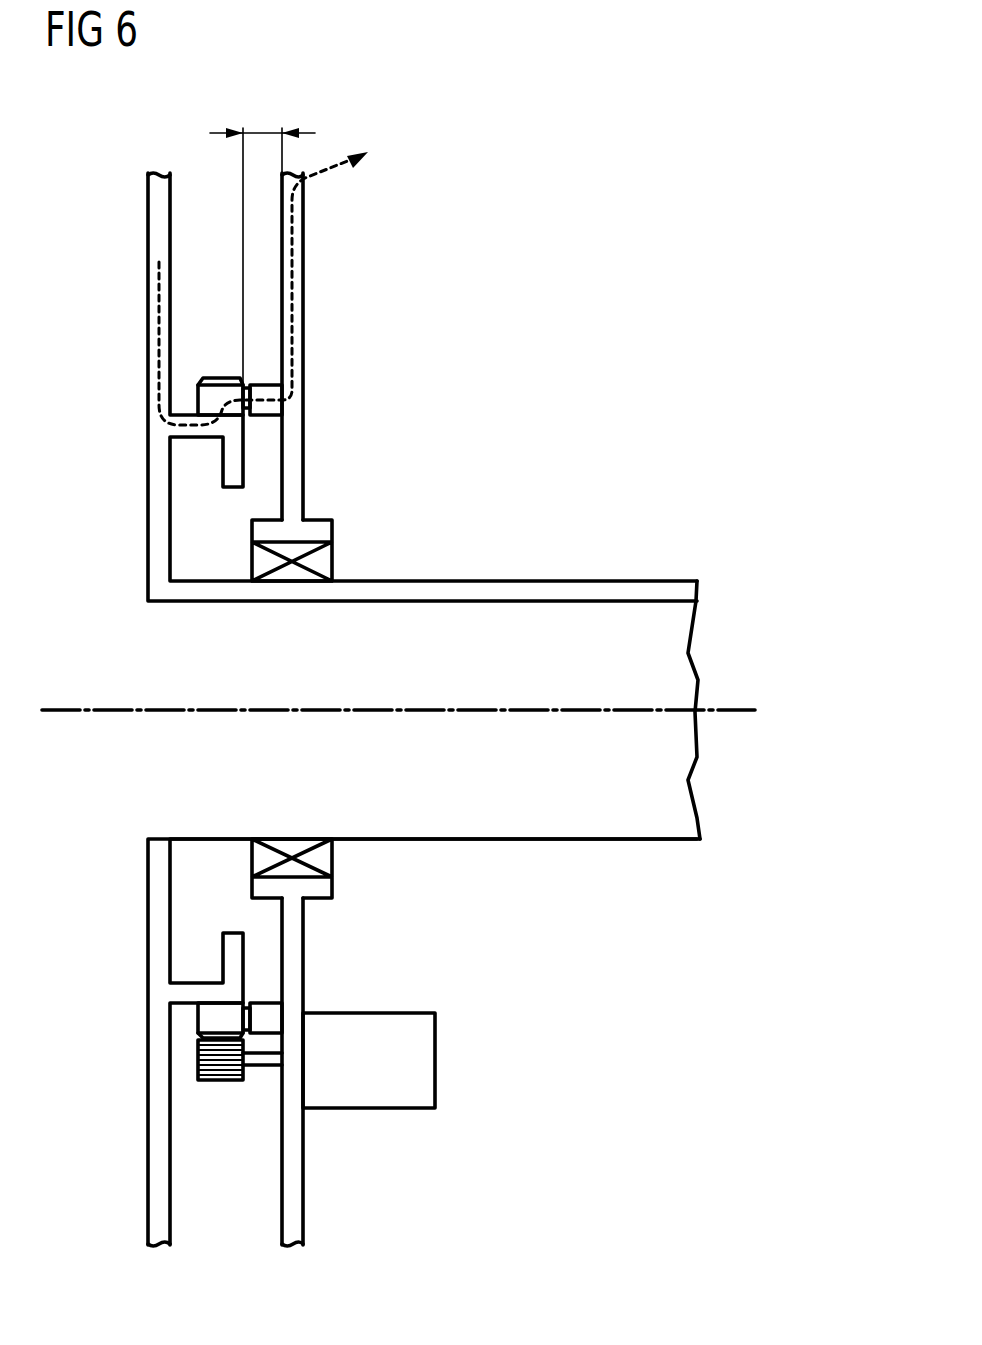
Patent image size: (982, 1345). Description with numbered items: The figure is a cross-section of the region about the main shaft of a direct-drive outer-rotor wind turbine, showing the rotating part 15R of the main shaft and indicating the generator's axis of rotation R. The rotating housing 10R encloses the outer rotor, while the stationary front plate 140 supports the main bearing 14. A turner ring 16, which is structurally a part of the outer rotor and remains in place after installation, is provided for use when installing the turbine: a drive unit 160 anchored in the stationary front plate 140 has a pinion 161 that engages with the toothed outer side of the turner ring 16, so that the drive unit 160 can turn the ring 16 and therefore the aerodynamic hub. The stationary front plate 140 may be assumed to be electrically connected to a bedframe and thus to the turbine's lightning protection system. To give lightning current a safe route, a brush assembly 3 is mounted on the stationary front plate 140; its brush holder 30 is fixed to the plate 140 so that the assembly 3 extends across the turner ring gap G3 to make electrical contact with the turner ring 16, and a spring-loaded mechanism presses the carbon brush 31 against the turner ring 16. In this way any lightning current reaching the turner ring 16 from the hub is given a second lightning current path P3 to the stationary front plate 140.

The rotating housing 10R is at (158, 203).
The rotating part of the main shaft 15R is at (568, 828).
The stationary front plate 140 is at (293, 480).
The main bearing 14 is at (323, 560).
The carbon brush 31 is at (245, 390).
The brush holder 30 is at (273, 408).
The brush assembly 3 is at (257, 355).
The turner ring gap G3 is at (262, 128).
The second lightning current path P3 is at (317, 176).
The turner ring 16 is at (208, 1020).
The pinion 161 is at (218, 1065).
The drive unit 160 is at (368, 1100).
The rotation axis R is at (68, 712).